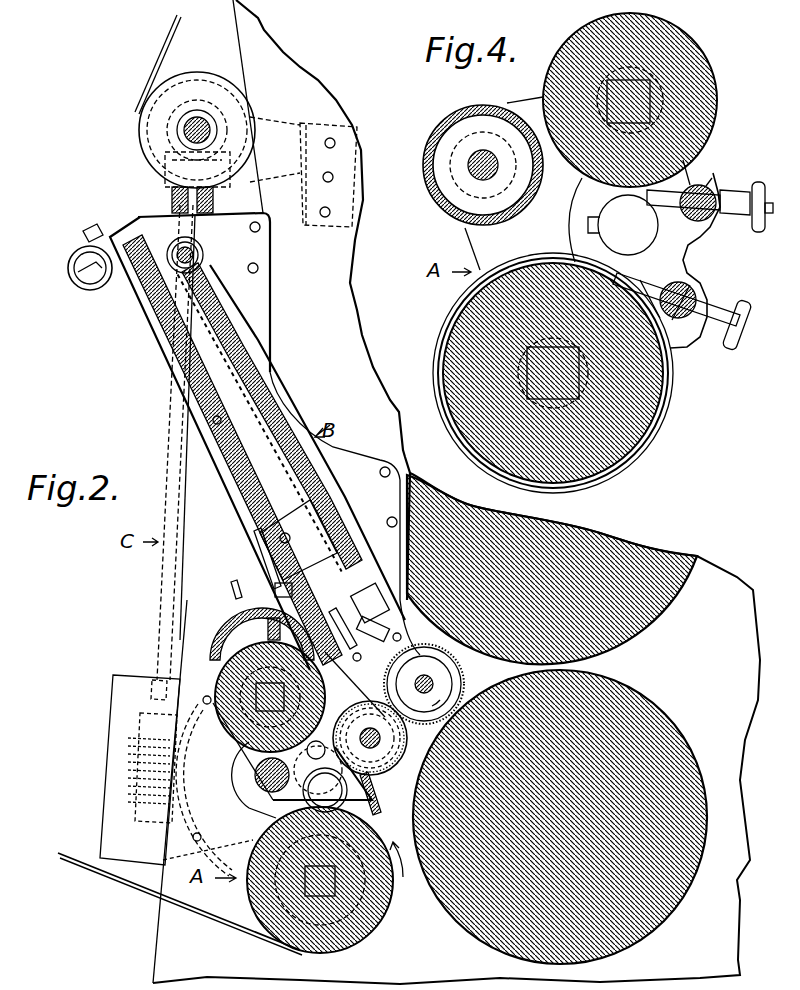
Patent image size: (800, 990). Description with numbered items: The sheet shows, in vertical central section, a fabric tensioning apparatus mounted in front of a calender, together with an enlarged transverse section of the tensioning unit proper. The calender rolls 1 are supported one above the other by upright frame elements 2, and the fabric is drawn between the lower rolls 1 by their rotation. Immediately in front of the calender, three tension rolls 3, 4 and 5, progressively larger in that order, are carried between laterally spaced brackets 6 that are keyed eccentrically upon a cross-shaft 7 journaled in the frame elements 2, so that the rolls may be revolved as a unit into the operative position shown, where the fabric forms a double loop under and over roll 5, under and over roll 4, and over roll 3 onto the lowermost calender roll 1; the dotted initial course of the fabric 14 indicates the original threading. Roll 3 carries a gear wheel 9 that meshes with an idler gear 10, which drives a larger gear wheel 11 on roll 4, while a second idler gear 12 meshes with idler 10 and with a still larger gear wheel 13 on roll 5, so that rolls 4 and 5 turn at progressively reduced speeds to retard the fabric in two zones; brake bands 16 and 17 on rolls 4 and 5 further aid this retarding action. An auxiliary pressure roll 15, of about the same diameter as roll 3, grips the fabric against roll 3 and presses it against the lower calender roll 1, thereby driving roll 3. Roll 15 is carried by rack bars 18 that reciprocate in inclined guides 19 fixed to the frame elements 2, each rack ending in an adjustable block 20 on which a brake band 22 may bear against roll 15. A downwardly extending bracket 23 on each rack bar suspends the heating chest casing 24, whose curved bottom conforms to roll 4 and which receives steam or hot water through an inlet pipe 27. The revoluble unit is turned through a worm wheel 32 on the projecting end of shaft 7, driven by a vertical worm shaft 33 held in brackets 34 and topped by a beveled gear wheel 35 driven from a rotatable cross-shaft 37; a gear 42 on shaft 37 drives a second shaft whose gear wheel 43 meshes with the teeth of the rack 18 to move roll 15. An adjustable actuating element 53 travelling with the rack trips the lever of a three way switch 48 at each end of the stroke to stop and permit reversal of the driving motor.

In FIG. 2, the calender rolls 1 is at (673, 622).
In FIG. 2, the upright frame elements 2 is at (743, 880).
In FIG. 2, the tension roll 3 is at (378, 790).
In FIG. 4, the tension roll 3 is at (455, 218).
In FIG. 2, the tension roll 4 is at (232, 692).
In FIG. 4, the tension roll 4 is at (690, 80).
In FIG. 2, the tension roll 5 is at (307, 930).
In FIG. 4, the tension roll 5 is at (645, 415).
In FIG. 2, the brackets 6 is at (250, 800).
In FIG. 4, the brackets 6 is at (592, 222).
In FIG. 2, the cross-shaft 7 is at (253, 778).
In FIG. 2, the gear wheel 9 is at (405, 740).
In FIG. 2, the idler gear wheel 10 is at (273, 813).
In FIG. 2, the gear wheel 11 is at (227, 727).
In FIG. 2, the second idler gear 12 is at (375, 800).
In FIG. 2, the gear wheel 13 is at (384, 897).
In FIG. 2, the initial course of the fabric 14 is at (137, 880).
In FIG. 2, the auxiliary tension or pressure roll 15 is at (462, 670).
In FIG. 4, the brake band 16 is at (700, 160).
In FIG. 4, the brake band 17 is at (655, 447).
In FIG. 2, the rack bars 18 is at (260, 406).
In FIG. 2, the guides 19 is at (200, 385).
In FIG. 2, the adjustable block 20 is at (395, 572).
In FIG. 2, the adjustable brake band 22 is at (355, 624).
In FIG. 2, the bracket 23 is at (258, 562).
In FIG. 2, the casing 24 is at (212, 634).
In FIG. 2, the inlet pipe 27 is at (238, 578).
In FIG. 2, the worm wheel 32 is at (133, 737).
In FIG. 2, the worm shaft 33 is at (170, 422).
In FIG. 2, the brackets 34 is at (175, 197).
In FIG. 2, the beveled gear wheel 35 is at (163, 157).
In FIG. 2, the rotatable cross-shaft 37 is at (178, 130).
In FIG. 2, the gear 42 is at (172, 112).
In FIG. 2, the gear wheel 43 is at (204, 250).
In FIG. 2, the three way switch 48 is at (78, 275).
In FIG. 2, the adjustable actuating element 53 is at (92, 229).